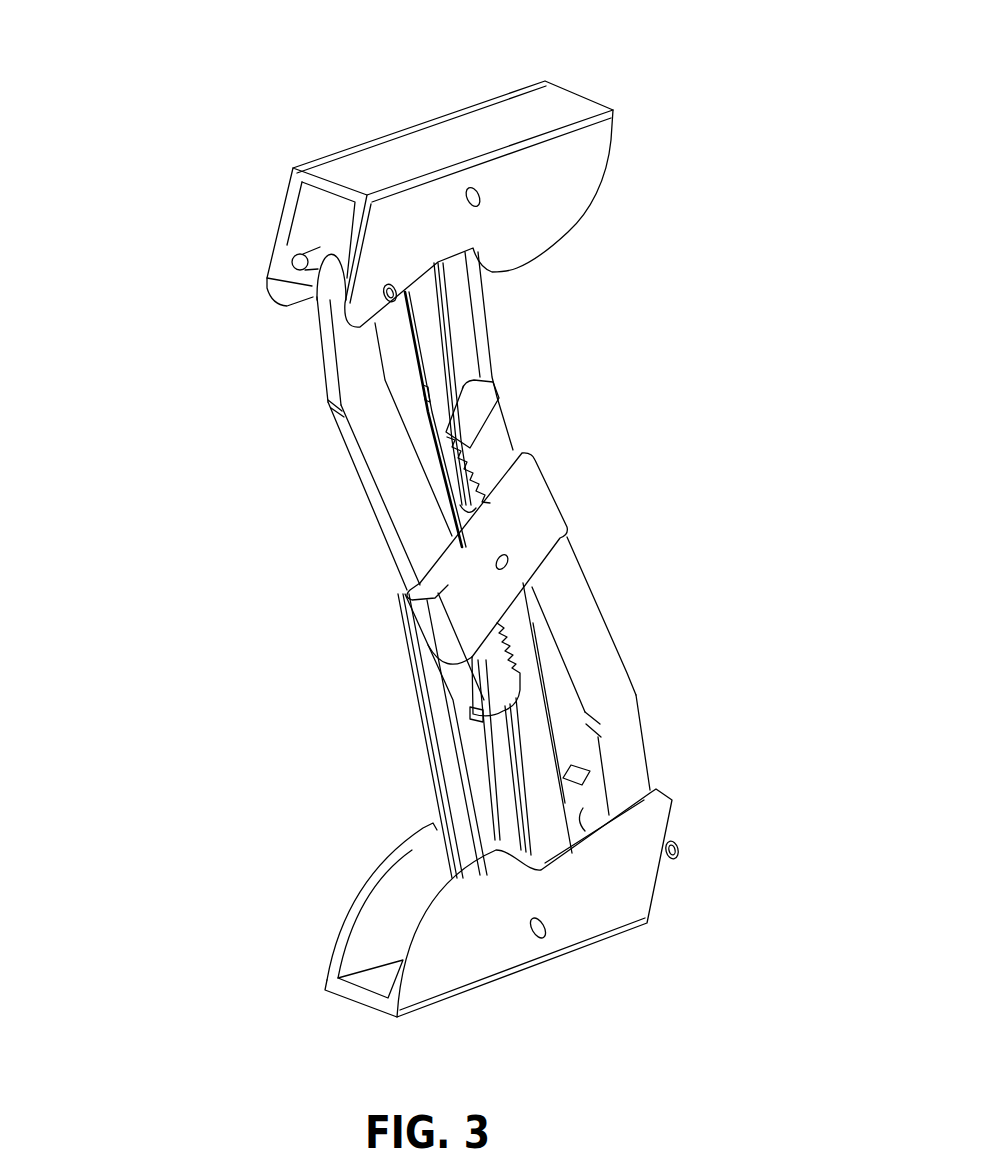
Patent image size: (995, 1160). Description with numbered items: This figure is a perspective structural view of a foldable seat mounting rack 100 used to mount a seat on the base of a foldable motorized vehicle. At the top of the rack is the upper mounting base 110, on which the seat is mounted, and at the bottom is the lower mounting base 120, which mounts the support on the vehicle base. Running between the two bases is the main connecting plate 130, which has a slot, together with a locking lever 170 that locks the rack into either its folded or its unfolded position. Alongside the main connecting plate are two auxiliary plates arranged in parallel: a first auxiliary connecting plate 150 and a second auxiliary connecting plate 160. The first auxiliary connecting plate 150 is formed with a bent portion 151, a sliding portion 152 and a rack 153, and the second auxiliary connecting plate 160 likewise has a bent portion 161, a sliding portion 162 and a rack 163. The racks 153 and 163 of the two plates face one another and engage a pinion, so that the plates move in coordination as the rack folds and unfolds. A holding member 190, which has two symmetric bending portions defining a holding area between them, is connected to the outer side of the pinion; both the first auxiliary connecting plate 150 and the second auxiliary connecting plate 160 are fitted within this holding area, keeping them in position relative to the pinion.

The foldable seat mounting rack 100 is at (100, 51).
The upper mounting base 110 is at (548, 177).
The lower mounting base 120 is at (590, 912).
The main connecting plate 130 is at (445, 753).
The first auxiliary connecting plate 150 is at (630, 533).
The bent portion 151 is at (622, 757).
The sliding portion 152 is at (563, 605).
The rack 153 is at (480, 452).
The second auxiliary connecting plate 160 is at (359, 566).
The bent portion 161 is at (350, 358).
The sliding portion 162 is at (417, 542).
The rack 163 is at (497, 642).
The locking lever 170 is at (430, 348).
The holding member 190 is at (525, 530).